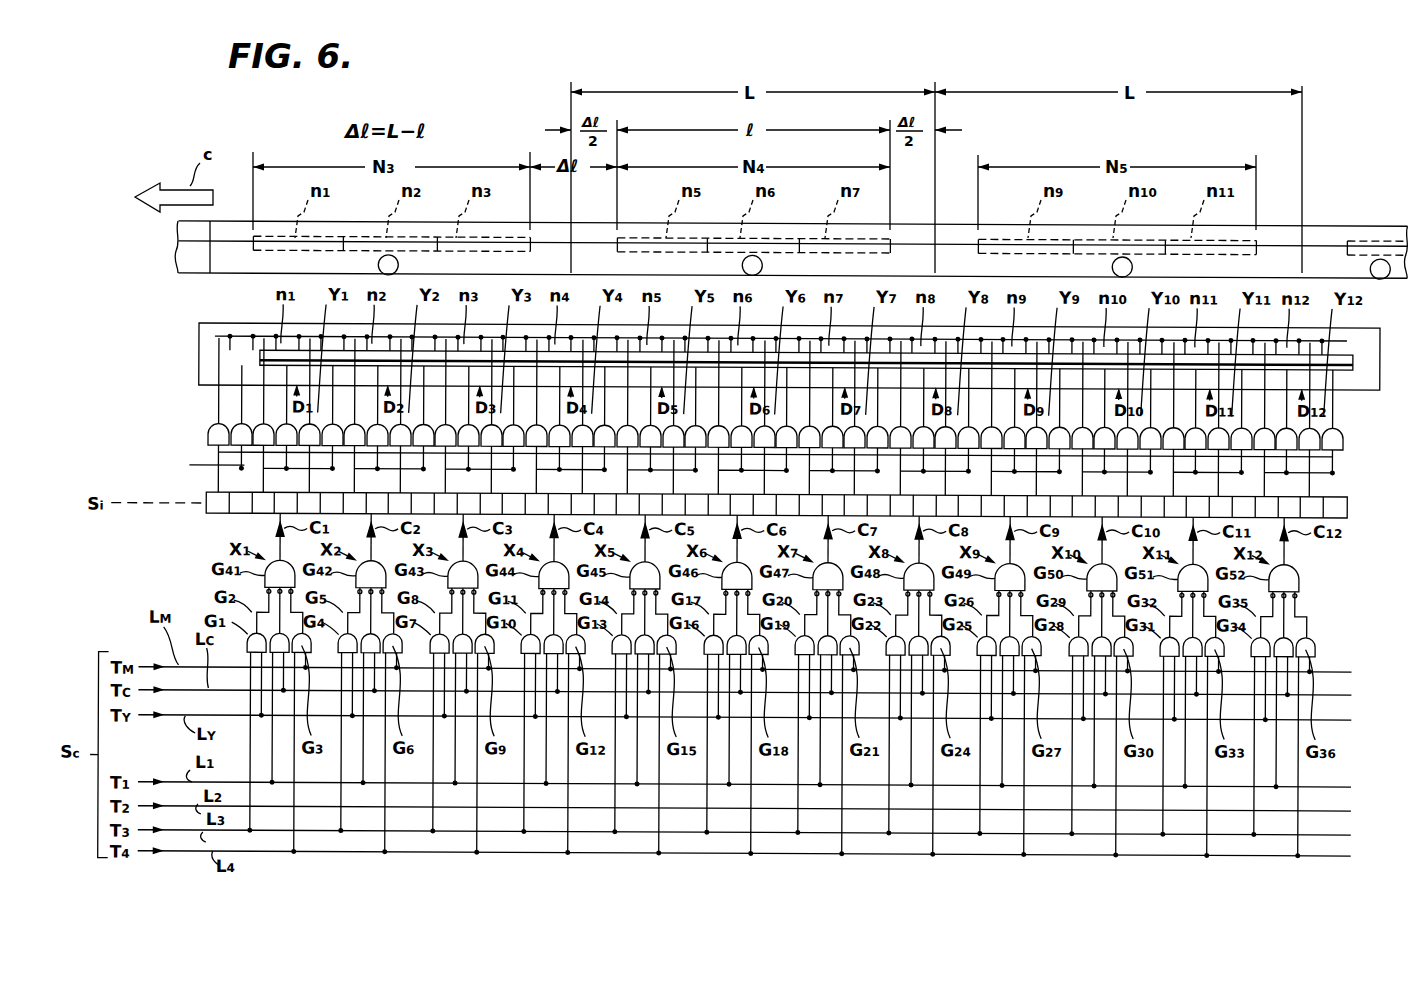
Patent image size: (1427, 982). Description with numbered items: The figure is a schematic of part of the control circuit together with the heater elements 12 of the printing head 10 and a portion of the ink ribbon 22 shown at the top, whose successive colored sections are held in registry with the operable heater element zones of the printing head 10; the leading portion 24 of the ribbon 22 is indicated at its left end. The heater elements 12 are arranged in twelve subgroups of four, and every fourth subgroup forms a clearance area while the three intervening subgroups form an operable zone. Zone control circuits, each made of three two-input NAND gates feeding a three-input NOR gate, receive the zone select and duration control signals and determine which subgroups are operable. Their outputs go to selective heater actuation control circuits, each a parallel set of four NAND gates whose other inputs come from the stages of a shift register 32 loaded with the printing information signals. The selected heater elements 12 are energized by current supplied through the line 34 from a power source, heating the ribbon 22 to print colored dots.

The printing head 10 is at (190, 340).
The heater elements 12 is at (262, 377).
The ink ribbon 22 is at (502, 221).
The leading end of tape 24 is at (205, 225).
The shift register 32 is at (200, 520).
The line 34 is at (235, 323).